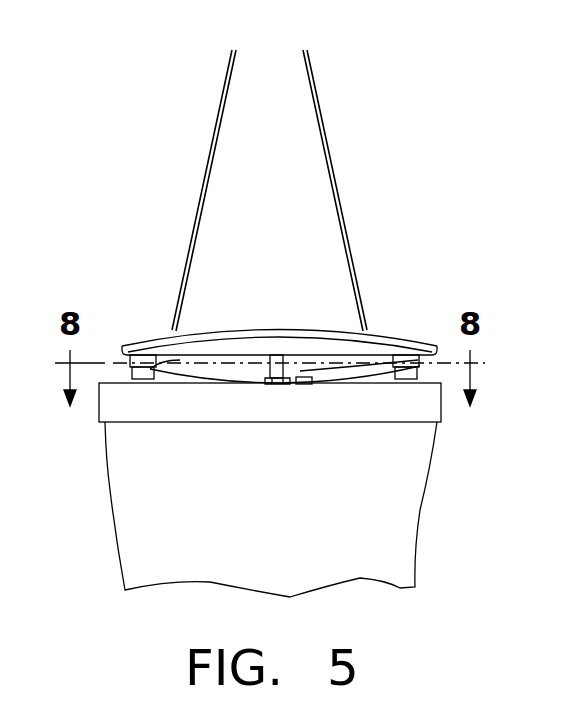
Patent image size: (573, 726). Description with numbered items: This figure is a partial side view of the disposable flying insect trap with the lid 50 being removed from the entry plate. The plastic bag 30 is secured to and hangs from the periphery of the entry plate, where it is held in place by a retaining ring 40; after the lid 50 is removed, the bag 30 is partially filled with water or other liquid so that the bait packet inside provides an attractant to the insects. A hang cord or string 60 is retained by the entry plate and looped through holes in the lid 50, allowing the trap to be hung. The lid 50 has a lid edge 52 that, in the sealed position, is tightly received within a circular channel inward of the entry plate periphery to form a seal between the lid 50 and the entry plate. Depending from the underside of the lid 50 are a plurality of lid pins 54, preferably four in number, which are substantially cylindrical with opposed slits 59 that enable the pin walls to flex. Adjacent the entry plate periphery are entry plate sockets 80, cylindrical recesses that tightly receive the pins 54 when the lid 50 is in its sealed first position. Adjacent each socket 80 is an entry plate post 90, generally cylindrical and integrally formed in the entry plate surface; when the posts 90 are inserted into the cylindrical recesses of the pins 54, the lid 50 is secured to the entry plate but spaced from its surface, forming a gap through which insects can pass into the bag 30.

The plastic bag 30 is at (418, 513).
The retaining ring 40 is at (442, 412).
The lid 50 is at (275, 331).
The lid edge 52 is at (425, 352).
The lid pins 54 is at (250, 340).
The opposed slits 59 is at (305, 340).
The hang cord or string 60 is at (347, 202).
The entry plate sockets 80 is at (275, 385).
The entry plate posts 90 is at (307, 384).